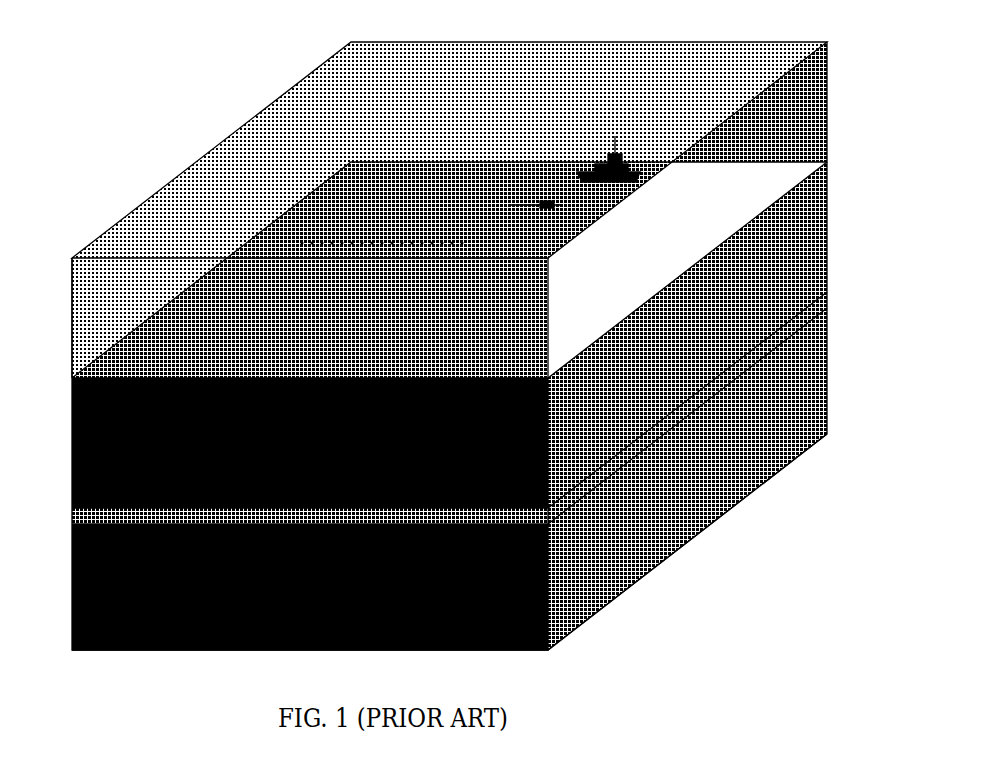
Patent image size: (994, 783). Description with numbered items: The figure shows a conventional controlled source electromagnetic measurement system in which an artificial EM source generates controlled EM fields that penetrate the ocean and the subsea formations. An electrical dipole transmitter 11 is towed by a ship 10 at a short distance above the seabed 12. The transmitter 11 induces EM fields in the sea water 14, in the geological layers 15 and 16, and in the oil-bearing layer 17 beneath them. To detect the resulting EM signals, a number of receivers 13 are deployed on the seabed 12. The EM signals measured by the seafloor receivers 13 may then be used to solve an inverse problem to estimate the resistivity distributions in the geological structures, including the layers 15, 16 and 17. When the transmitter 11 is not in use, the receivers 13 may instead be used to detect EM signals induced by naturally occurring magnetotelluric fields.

The ship 10 is at (620, 150).
The electrical dipole transmitter 11 is at (547, 200).
The seabed 12 is at (160, 352).
The receivers 13 is at (313, 243).
The sea water 14 is at (587, 278).
The geological layer 15 is at (602, 400).
The geological layer 16 is at (617, 518).
The oil-bearing layer 17 is at (632, 442).